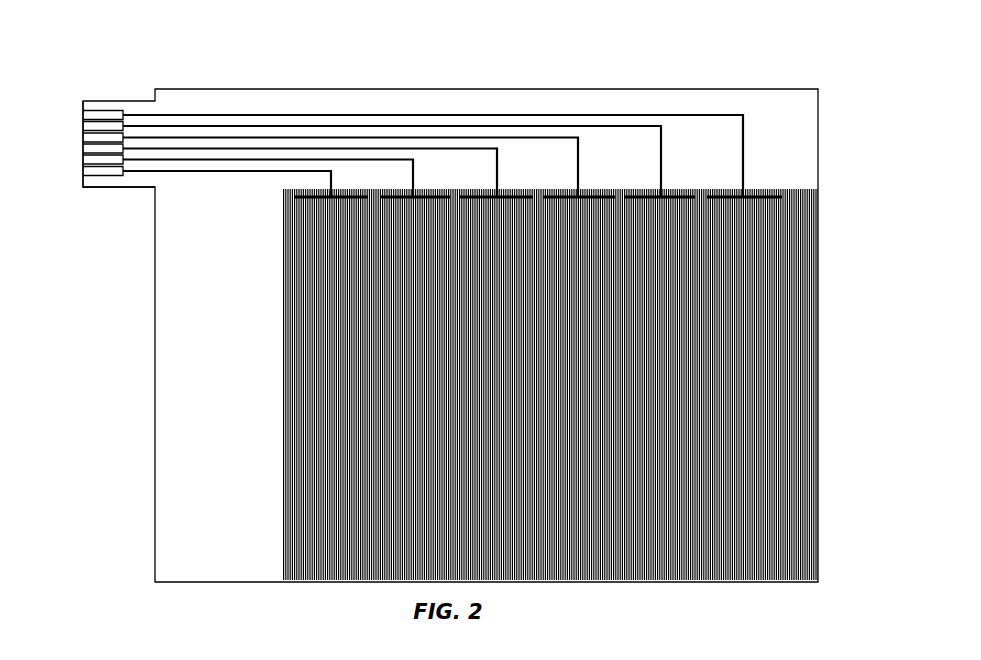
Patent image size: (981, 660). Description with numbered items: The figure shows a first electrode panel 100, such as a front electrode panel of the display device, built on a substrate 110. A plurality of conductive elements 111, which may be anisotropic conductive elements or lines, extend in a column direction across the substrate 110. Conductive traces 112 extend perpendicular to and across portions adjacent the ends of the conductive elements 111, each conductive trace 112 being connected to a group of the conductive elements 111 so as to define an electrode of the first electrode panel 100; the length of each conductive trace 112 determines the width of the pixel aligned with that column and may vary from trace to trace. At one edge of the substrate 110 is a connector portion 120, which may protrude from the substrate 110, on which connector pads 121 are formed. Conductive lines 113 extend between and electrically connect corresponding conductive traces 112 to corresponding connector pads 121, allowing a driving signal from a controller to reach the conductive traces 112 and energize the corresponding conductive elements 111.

The first electrode panel 100 is at (476, 317).
The substrate 110 is at (807, 148).
The conductive elements 111 is at (800, 408).
The conductive traces 112 is at (770, 200).
The conductive lines 113 is at (703, 112).
The connector portion 120 is at (96, 137).
The connector pads 121 is at (103, 114).